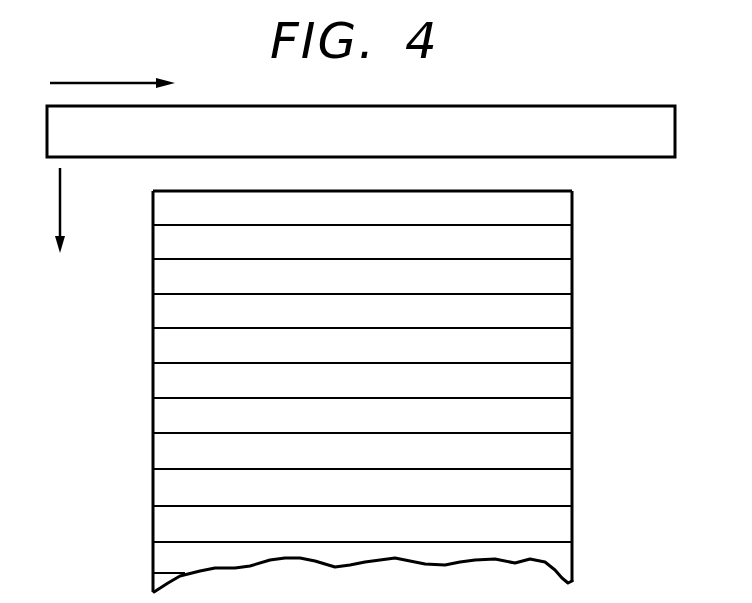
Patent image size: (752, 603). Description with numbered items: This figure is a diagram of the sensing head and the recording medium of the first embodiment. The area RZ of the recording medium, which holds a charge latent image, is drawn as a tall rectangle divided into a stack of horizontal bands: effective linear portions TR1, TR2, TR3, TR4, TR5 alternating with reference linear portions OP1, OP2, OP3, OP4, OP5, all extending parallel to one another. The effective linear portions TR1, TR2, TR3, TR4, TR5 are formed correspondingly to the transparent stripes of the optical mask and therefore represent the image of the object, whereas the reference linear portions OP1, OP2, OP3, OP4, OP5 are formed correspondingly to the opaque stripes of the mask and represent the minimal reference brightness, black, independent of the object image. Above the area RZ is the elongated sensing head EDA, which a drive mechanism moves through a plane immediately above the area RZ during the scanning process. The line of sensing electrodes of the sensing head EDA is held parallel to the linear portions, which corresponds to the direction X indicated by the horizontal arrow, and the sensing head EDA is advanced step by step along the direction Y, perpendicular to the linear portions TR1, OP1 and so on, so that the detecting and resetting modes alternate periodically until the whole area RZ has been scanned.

The X direction (scanning direction) X is at (87, 82).
The Y direction (feed direction) Y is at (59, 193).
The sensing head EDA is at (628, 123).
The area of the recording medium RZ is at (411, 391).
The effective linear portion TR1 is at (362, 210).
The reference linear portion OP1 is at (362, 244).
The effective linear portion TR2 is at (362, 279).
The reference linear portion OP2 is at (362, 313).
The effective linear portion TR3 is at (362, 348).
The reference linear portion OP3 is at (362, 383).
The effective linear portion TR4 is at (362, 418).
The reference linear portion OP4 is at (362, 454).
The effective linear portion TR5 is at (362, 490).
The reference linear portion OP5 is at (350, 526).